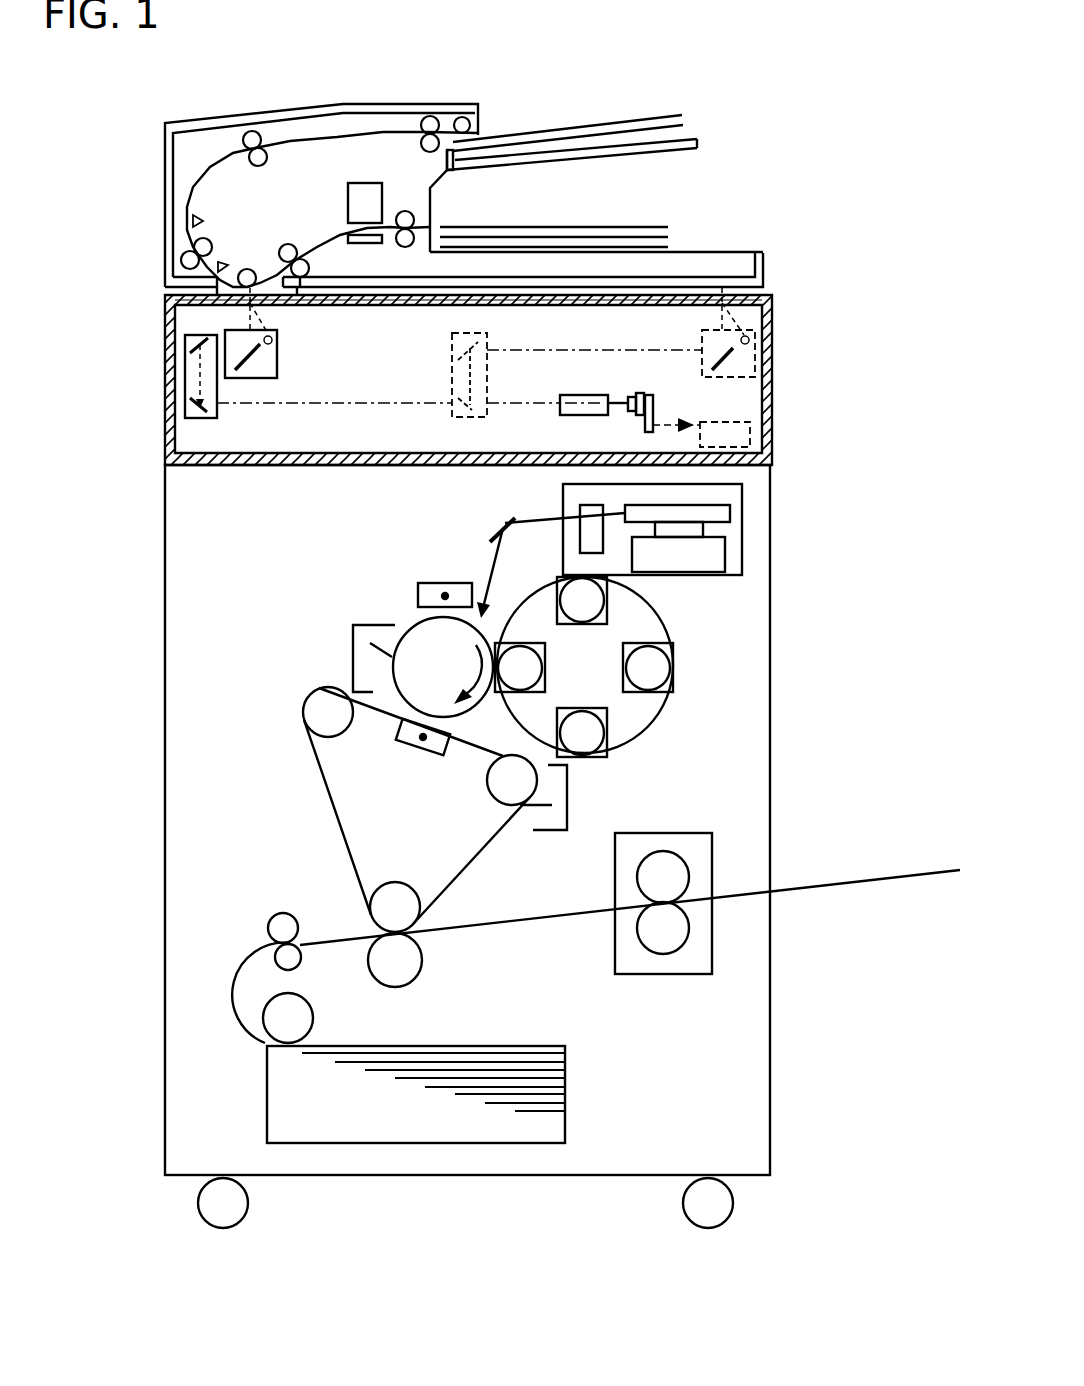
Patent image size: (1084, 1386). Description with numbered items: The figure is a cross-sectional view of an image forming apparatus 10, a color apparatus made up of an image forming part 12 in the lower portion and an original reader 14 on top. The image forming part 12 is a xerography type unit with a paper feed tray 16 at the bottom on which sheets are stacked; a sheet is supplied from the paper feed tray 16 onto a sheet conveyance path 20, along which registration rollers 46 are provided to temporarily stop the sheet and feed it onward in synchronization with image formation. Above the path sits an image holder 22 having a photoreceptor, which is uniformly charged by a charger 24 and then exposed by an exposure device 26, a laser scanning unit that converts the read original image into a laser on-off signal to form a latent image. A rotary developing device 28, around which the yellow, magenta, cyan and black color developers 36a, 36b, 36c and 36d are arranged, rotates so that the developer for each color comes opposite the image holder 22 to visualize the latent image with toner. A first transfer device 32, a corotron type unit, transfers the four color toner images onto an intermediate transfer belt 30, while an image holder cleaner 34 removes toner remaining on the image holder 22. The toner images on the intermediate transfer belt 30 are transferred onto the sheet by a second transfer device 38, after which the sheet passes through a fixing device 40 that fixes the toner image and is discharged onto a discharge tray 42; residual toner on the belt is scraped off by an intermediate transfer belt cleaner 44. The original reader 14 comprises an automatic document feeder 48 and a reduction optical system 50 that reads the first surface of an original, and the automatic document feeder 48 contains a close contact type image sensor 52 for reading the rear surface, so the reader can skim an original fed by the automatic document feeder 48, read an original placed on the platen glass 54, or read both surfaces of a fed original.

The image forming apparatus 10 is at (524, 1353).
The image forming part 12 is at (774, 765).
The original reader 14 is at (775, 284).
The paper feed tray 16 is at (533, 1147).
The sheet conveyance path 20 is at (238, 998).
The image holder 22 is at (415, 632).
The charger 24 is at (425, 587).
The exposure device 26 is at (743, 562).
The developing device 28 is at (645, 703).
The intermediate transfer belt 30 is at (333, 815).
The first transfer device 32 is at (405, 722).
The image holder cleaner 34 is at (352, 648).
The Y color developer 36a is at (595, 605).
The M color developer 36b is at (657, 668).
The C color developer 36c is at (605, 743).
The K color developer 36d is at (518, 687).
The second transfer device 38 is at (412, 965).
The fixing device 40 is at (673, 975).
The discharge tray 42 is at (850, 876).
The intermediate transfer belt cleaner 44 is at (570, 800).
The registration rollers 46 is at (275, 921).
The automatic document feeder 48 is at (150, 234).
The reduction optical system 50 is at (152, 410).
The close contact type image sensor 52 is at (347, 202).
The platen glass 54 is at (390, 300).